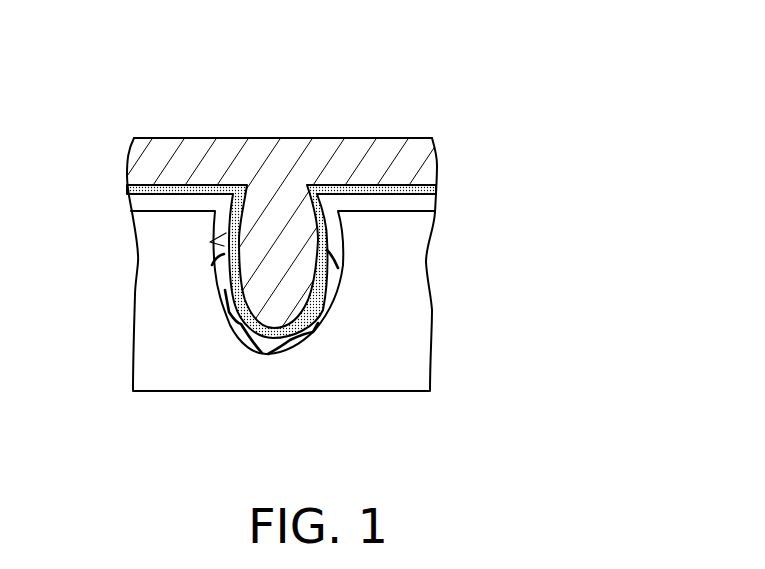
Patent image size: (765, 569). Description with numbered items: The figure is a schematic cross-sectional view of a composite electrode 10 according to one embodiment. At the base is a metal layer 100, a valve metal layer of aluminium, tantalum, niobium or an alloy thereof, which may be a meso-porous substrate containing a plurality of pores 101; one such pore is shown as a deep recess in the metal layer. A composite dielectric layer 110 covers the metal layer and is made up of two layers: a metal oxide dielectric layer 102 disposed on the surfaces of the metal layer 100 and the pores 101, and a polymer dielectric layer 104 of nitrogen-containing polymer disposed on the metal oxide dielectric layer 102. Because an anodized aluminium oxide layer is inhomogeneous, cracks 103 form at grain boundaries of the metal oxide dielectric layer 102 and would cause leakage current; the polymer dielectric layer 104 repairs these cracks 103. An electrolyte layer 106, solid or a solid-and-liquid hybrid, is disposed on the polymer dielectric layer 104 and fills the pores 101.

The composite electrode 10 is at (553, 67).
The metal layer 100 is at (402, 316).
The pores 101 is at (249, 218).
The metal oxide dielectric layer 102 is at (413, 202).
The cracks 103 is at (333, 257).
The polymer dielectric layer 104 is at (433, 191).
The electrolyte layer 106 is at (417, 163).
The composite dielectric layer 110 is at (545, 169).